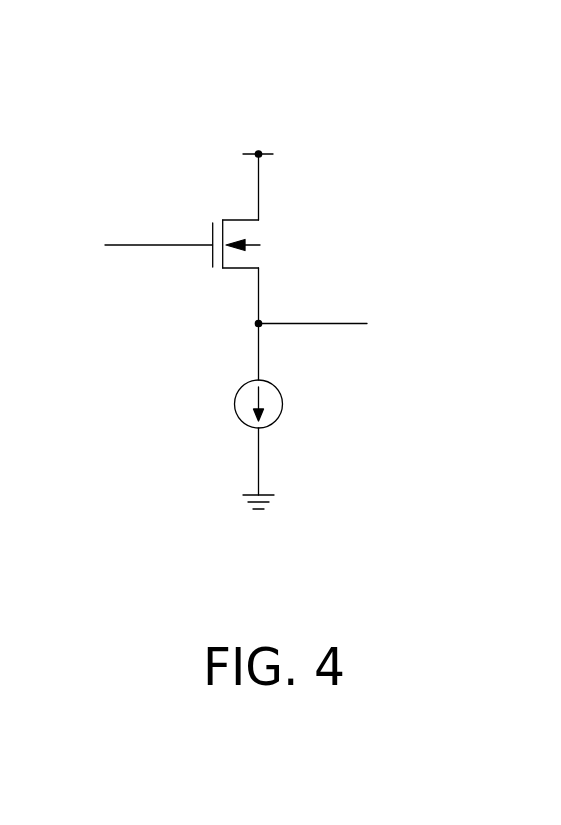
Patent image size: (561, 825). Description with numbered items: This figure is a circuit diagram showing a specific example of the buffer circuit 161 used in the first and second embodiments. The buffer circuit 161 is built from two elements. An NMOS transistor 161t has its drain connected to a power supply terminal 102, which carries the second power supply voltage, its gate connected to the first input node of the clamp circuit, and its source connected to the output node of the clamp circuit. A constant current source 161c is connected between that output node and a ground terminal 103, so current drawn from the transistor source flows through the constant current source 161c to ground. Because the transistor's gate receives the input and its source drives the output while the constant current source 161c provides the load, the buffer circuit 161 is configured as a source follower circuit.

The buffer circuit 161 is at (405, 64).
The NMOS transistor 161t is at (237, 220).
The constant current source 161c is at (283, 400).
The power supply terminal 102 is at (262, 154).
The ground terminal 103 is at (265, 494).